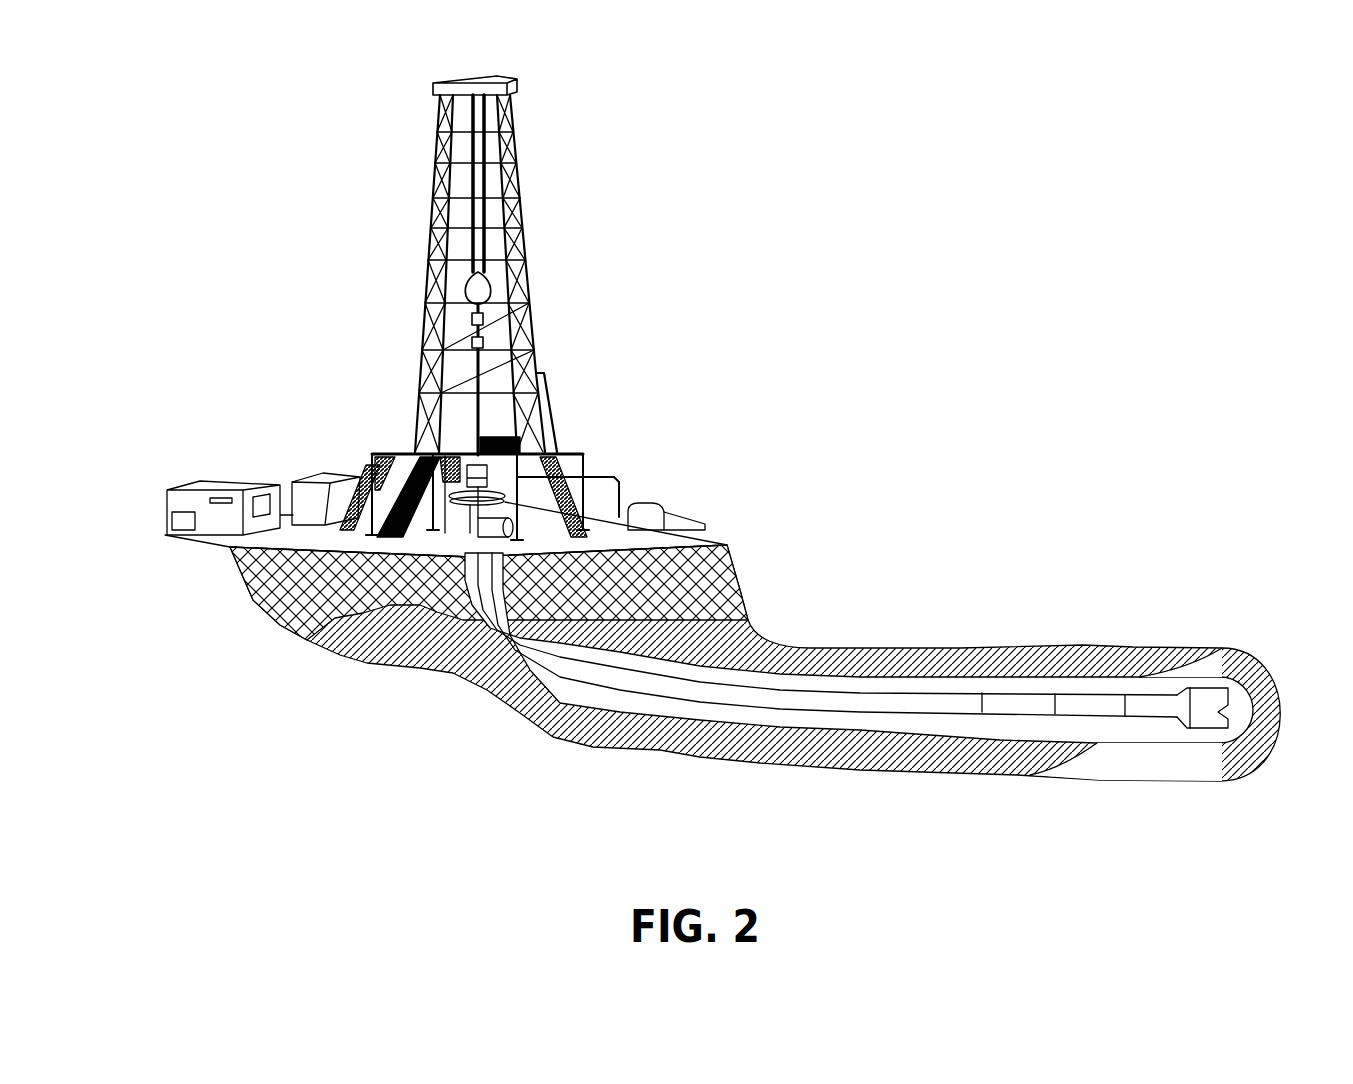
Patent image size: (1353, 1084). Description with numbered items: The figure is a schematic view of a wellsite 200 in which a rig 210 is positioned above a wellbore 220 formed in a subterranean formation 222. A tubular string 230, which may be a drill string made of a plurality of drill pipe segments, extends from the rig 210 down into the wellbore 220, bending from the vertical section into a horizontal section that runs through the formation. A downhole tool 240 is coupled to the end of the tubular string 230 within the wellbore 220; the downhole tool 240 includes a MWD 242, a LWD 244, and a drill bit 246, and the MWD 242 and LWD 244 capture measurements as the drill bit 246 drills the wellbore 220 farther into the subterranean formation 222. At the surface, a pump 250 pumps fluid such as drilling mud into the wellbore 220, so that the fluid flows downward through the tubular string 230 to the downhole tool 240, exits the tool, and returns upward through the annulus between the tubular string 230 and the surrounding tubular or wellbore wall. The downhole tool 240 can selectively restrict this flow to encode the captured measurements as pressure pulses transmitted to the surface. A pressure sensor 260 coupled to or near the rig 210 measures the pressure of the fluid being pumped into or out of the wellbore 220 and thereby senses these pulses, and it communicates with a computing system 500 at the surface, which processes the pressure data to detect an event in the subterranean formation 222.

The wellsite 200 is at (727, 123).
The rig 210 is at (509, 74).
The wellbore 220 is at (838, 677).
The subterranean formation 222 is at (706, 594).
The tubular string 230 is at (913, 693).
The downhole tool 240 is at (1124, 720).
The MWD 242 is at (1097, 708).
The LWD 244 is at (1153, 708).
The drill bit 246 is at (1207, 715).
The pump 250 is at (322, 477).
The pressure sensor 260 is at (503, 278).
The computing system 500 is at (167, 507).